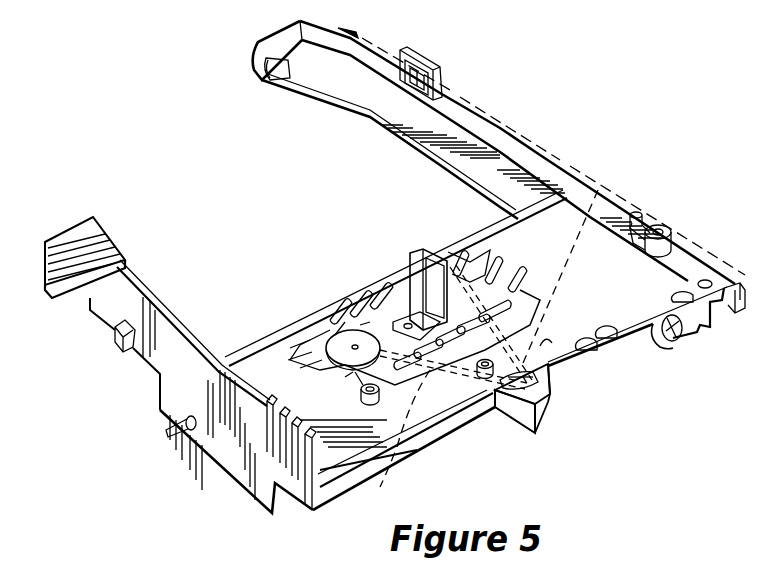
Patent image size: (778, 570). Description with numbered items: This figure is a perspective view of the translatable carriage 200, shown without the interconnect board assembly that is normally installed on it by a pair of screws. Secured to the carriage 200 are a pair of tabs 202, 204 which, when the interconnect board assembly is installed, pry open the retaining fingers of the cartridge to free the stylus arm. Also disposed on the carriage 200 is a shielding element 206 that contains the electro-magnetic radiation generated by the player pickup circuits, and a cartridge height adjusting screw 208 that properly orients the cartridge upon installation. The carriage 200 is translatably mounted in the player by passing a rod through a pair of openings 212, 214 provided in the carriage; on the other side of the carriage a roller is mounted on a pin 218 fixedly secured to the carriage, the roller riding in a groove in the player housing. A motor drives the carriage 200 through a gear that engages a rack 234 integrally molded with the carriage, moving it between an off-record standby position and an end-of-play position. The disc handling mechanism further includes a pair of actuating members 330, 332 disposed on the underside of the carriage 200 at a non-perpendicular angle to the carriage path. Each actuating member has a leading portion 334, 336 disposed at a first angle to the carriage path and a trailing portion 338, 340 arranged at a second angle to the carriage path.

The carriage 200 is at (524, 115).
The tab 202 is at (410, 256).
The tab 204 is at (437, 262).
The shielding element 206 is at (378, 283).
The cartridge height adjusting screw 208 is at (353, 347).
The opening 212 is at (283, 80).
The opening 214 is at (673, 342).
The pin 218 is at (179, 442).
The rack 234 is at (352, 30).
The actuating member 330 is at (468, 443).
The actuating member 332 is at (553, 388).
The leading portion 334 is at (513, 418).
The leading portion 336 is at (551, 404).
The trailing portion 338 is at (386, 482).
The trailing portion 340 is at (600, 185).